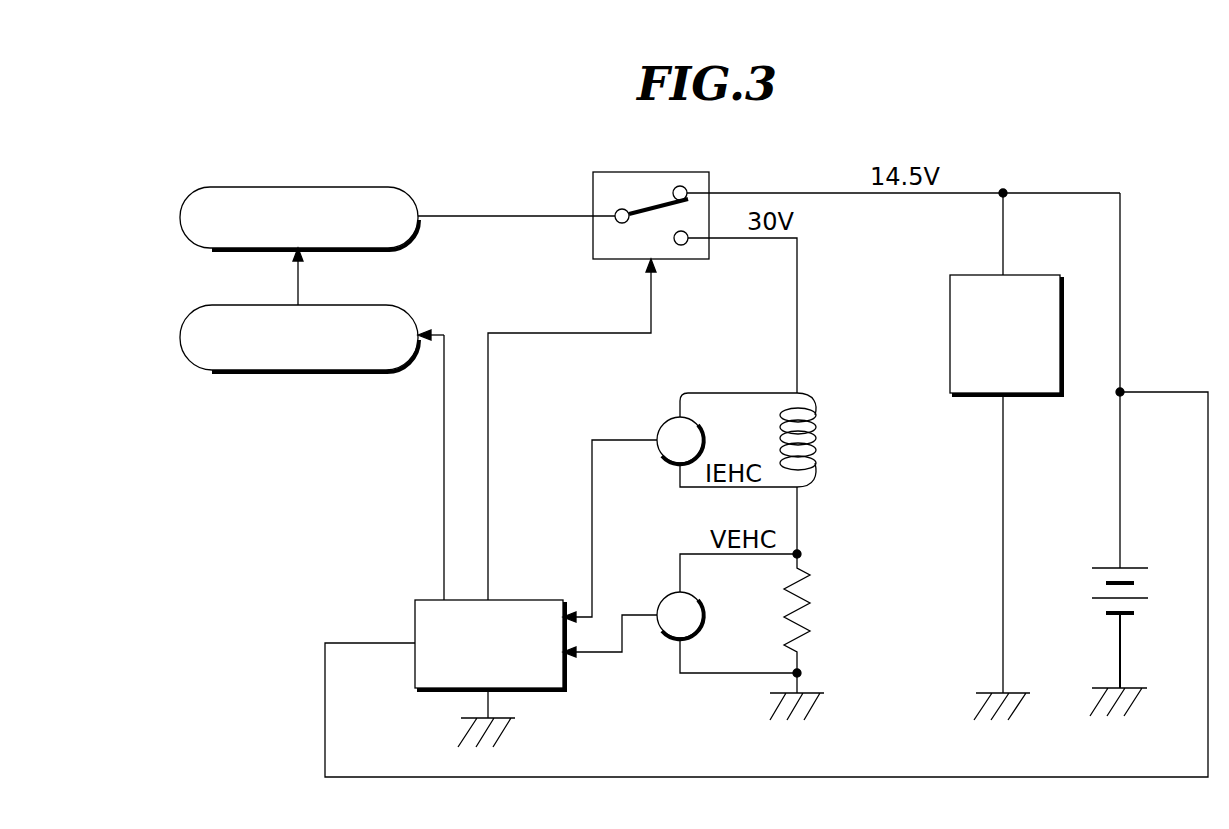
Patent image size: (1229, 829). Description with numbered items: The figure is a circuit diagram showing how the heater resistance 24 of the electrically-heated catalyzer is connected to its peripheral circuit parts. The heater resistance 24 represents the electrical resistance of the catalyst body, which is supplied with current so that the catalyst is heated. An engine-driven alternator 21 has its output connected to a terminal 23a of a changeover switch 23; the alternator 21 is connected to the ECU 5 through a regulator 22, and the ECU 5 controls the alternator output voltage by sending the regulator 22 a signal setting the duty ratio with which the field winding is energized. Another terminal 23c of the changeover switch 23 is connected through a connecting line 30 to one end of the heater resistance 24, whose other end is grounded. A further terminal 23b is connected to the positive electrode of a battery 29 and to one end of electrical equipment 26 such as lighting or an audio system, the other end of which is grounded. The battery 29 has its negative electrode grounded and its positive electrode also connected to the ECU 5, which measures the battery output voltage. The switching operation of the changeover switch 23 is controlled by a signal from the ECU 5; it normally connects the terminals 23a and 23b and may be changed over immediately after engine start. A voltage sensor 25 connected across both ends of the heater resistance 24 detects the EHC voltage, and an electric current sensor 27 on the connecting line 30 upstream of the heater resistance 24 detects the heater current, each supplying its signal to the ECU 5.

The ECU 5 is at (426, 599).
The alternator 21 is at (420, 191).
The regulator 22 is at (420, 310).
The changeover switch 23 is at (660, 222).
The terminal of changeover switch 23a is at (615, 211).
The terminal of changeover switch 23b is at (686, 185).
The terminal of changeover switch 23c is at (687, 246).
The heater resistance 24 is at (802, 590).
The voltage sensor 25 is at (660, 597).
The electrical equipment 26 is at (1062, 285).
The electric current sensor 27 is at (660, 420).
The battery 29 is at (1150, 586).
The connecting line 30 is at (797, 303).